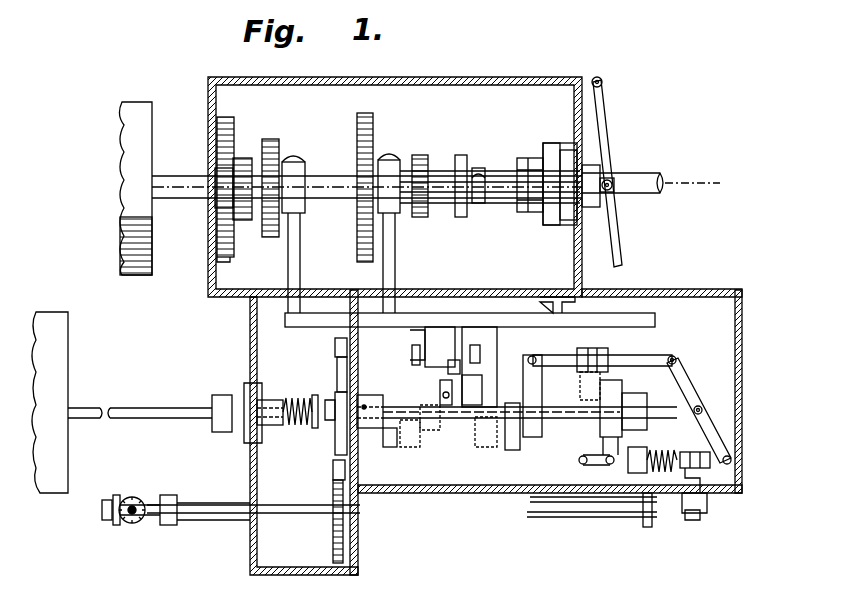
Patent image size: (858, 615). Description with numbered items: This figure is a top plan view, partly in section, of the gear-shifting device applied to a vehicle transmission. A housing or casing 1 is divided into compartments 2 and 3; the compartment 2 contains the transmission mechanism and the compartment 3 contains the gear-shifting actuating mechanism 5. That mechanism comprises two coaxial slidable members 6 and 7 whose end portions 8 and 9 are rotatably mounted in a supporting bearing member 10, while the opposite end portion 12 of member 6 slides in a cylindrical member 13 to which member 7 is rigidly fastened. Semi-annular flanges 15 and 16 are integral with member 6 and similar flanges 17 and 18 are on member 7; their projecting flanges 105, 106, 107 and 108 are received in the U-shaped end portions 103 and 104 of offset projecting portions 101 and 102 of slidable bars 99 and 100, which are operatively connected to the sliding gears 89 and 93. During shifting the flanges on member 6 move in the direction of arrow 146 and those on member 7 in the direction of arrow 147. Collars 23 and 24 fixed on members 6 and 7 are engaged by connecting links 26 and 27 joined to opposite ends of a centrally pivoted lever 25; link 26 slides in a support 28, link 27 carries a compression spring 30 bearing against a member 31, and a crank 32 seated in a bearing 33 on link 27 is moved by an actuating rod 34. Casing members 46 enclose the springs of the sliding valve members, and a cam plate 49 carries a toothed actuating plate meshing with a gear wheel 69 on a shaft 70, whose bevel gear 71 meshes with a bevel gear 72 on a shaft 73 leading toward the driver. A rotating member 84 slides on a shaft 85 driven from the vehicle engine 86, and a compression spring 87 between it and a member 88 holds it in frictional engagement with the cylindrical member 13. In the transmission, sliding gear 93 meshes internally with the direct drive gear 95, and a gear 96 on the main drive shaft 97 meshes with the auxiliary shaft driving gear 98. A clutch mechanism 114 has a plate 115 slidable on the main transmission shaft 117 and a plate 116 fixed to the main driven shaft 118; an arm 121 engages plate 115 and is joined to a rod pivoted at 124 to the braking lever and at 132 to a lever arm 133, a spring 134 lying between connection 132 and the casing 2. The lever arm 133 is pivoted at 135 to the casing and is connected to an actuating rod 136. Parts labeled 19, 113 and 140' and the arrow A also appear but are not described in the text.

The housing or casing 1 is at (224, 311).
The compartment 2 is at (496, 77).
The compartment 3 is at (380, 493).
The gear-shifting actuating mechanism 5 is at (704, 195).
The slidable member 6 is at (502, 405).
The slidable member 7 is at (482, 485).
The end portion 8 is at (602, 372).
The end portion 9 is at (664, 412).
The supporting bearing member 10 is at (632, 424).
The end portion 12 is at (334, 440).
The cylindrical member 13 is at (372, 395).
The semi-annular flange 15 is at (472, 392).
The semi-annular flange 16 is at (383, 444).
The semi-annular flange 17 is at (488, 447).
The semi-annular flange 18 is at (440, 392).
The arm 19 is at (429, 453).
The collar 23 is at (547, 440).
The collar 24 is at (597, 460).
The lever 25 is at (700, 395).
The connecting link 26 is at (662, 355).
The connecting link 27 is at (649, 527).
The support 28 is at (596, 348).
The compression spring 30 is at (657, 475).
The member 31 is at (704, 474).
The crank 32 is at (710, 502).
The bearing 33 is at (702, 455).
The actuating rod 34 is at (692, 520).
The casing members 46 is at (335, 344).
The cam plate 49 is at (337, 368).
The gear wheel 69 is at (338, 563).
The rotatable shaft 70 is at (298, 514).
The bevel gear 71 is at (120, 497).
The bevel gear 72 is at (140, 498).
The rotatable shaft 73 is at (133, 522).
The rotating member 84 is at (318, 395).
The shaft 85 is at (198, 420).
The vehicle engine 86 is at (57, 375).
The compression spring 87 is at (304, 426).
The member 88 is at (272, 426).
The sliding gear 89 is at (374, 132).
The sliding gear 93 is at (278, 140).
The third speed or direct drive gear 95 is at (244, 158).
The gear 96 is at (220, 212).
The main drive shaft 97 is at (179, 178).
The auxiliary shaft driving gear 98 is at (226, 262).
The slidable bar 99 is at (396, 250).
The slidable bar 100 is at (300, 255).
The offset projecting portion 101 is at (482, 340).
The offset projecting portion 102 is at (412, 340).
The flange-engaging end portion 103 is at (454, 362).
The flange-engaging end portion 104 is at (416, 368).
The projecting flange 105 is at (484, 362).
The projecting flange 106 is at (514, 450).
The projecting flange 107 is at (440, 430).
The projecting flange 108 is at (407, 447).
The hanger 113 is at (556, 313).
The clutch mechanism 114 is at (546, 136).
The clutch plate 115 is at (552, 226).
The clutch plate 116 is at (569, 221).
The main transmission shaft 117 is at (442, 172).
The main driven shaft 118 is at (665, 178).
The arm 121 is at (524, 212).
The pivotal connection 124 is at (482, 204).
The pivotal connection 132 is at (618, 180).
The lever arm 133 is at (610, 130).
The spring 134 is at (614, 178).
The pivotal connection 135 is at (603, 80).
The actuating rod 136 is at (602, 518).
The plate 140' is at (151, 171).
The arrow 146 is at (563, 382).
The arrow 147 is at (462, 432).
The direction arrow A is at (492, 161).